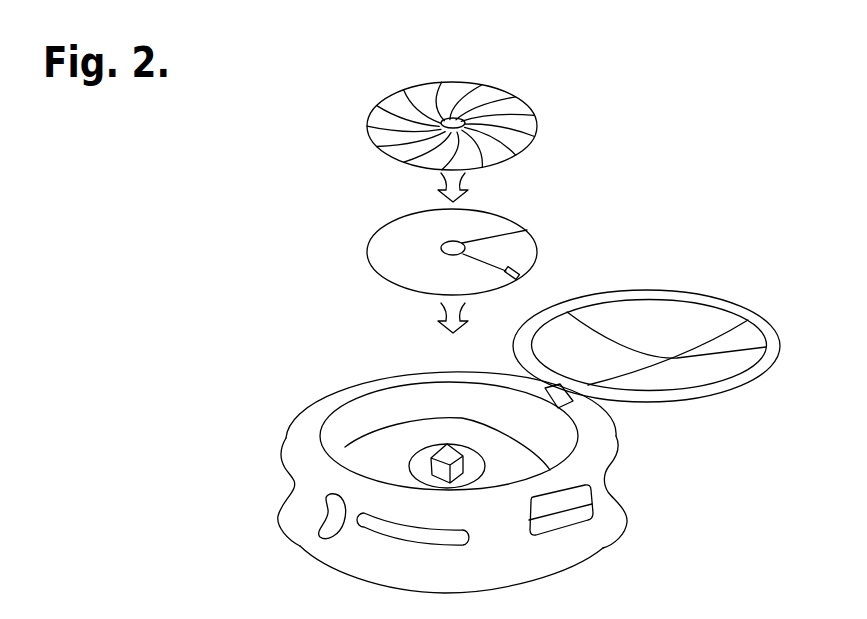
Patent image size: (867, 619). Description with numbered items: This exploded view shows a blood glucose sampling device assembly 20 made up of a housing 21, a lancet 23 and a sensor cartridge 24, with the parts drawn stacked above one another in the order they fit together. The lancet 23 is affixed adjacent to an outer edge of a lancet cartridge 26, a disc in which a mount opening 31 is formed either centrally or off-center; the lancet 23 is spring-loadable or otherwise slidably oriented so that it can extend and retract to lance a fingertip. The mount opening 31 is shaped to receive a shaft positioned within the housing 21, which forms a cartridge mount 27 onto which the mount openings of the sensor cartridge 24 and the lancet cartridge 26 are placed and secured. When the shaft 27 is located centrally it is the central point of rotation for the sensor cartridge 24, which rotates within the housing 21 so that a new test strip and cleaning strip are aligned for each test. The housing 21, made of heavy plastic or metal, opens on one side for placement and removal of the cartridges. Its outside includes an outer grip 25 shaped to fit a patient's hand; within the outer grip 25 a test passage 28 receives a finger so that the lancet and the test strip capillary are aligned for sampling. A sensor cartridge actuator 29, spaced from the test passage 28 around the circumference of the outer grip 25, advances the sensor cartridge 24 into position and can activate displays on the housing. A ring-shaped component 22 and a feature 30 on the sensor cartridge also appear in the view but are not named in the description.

The device assembly 20 is at (147, 131).
The housing 21 is at (445, 485).
The retaining ring 22 is at (725, 392).
The lancet 23 is at (522, 276).
The sensor cartridge 24 is at (437, 125).
The outer grip 25 is at (607, 477).
The lancet cartridge 26 is at (470, 248).
The cartridge mount 27 is at (410, 467).
The test passage 28 is at (587, 508).
The sensor cartridge actuator 29 is at (318, 538).
The fan blades 30 is at (515, 112).
The mount opening 31 is at (527, 230).